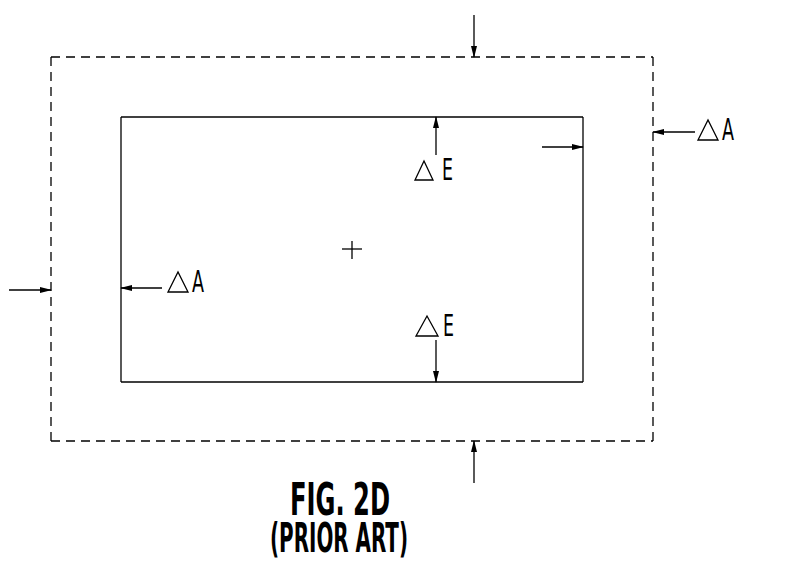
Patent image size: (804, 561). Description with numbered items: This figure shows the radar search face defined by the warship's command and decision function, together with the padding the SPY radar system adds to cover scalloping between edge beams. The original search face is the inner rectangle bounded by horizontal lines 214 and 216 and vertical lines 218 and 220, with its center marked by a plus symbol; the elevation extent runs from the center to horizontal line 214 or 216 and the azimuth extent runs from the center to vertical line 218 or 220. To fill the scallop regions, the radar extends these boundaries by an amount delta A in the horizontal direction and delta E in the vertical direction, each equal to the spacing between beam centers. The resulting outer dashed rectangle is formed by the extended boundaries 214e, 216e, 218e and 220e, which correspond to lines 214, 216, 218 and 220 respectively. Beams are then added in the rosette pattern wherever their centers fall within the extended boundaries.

The horizontal line 214 is at (243, 117).
The extended boundary 214e is at (249, 57).
The horizontal line 216 is at (228, 382).
The extended boundary 216e is at (617, 441).
The vertical line 218 is at (121, 250).
The extended boundary 218e is at (51, 115).
The vertical line 220 is at (583, 258).
The extended boundary 220e is at (653, 256).